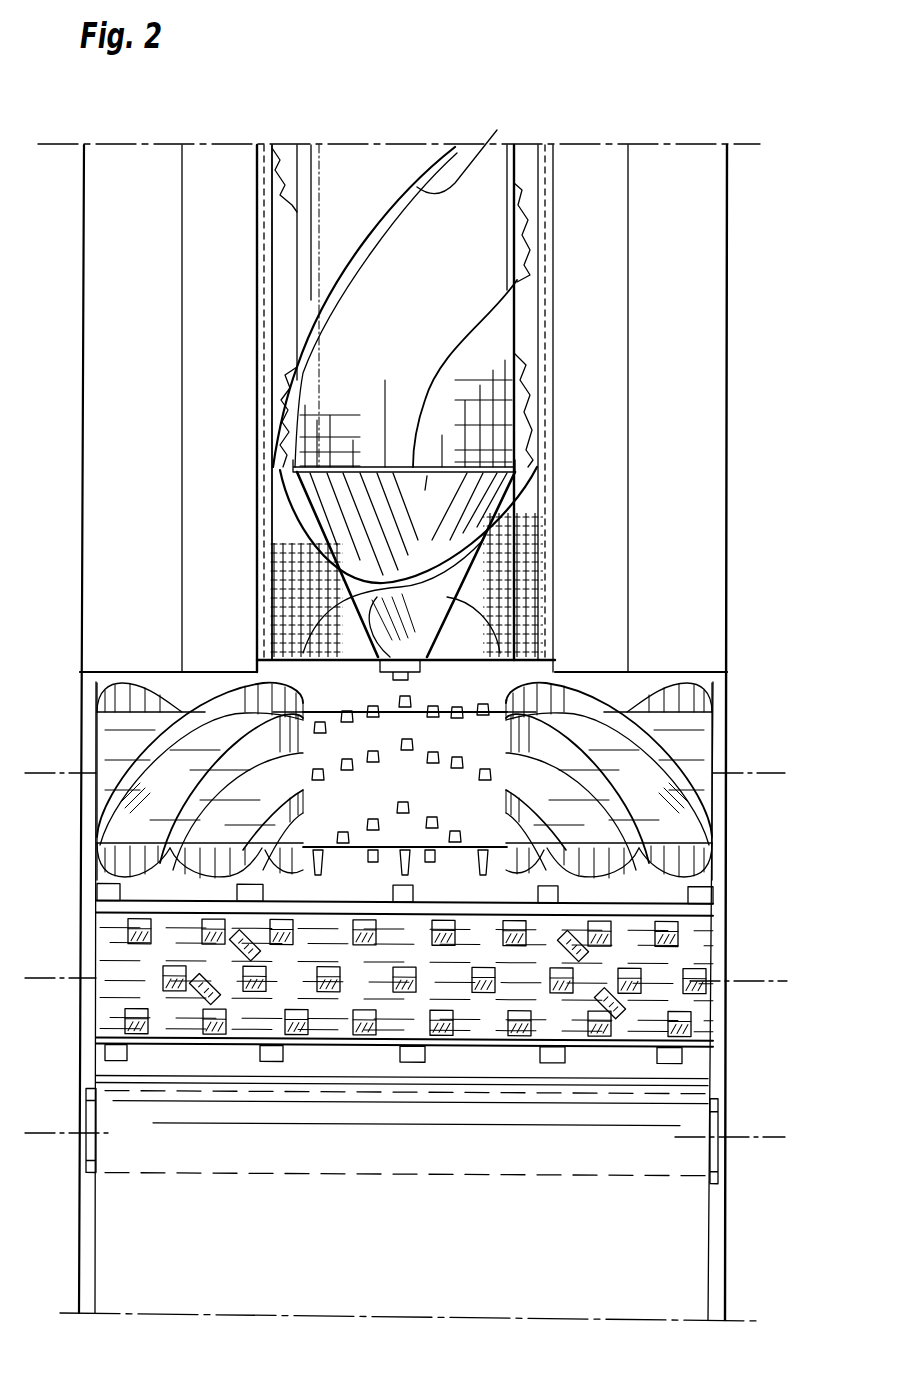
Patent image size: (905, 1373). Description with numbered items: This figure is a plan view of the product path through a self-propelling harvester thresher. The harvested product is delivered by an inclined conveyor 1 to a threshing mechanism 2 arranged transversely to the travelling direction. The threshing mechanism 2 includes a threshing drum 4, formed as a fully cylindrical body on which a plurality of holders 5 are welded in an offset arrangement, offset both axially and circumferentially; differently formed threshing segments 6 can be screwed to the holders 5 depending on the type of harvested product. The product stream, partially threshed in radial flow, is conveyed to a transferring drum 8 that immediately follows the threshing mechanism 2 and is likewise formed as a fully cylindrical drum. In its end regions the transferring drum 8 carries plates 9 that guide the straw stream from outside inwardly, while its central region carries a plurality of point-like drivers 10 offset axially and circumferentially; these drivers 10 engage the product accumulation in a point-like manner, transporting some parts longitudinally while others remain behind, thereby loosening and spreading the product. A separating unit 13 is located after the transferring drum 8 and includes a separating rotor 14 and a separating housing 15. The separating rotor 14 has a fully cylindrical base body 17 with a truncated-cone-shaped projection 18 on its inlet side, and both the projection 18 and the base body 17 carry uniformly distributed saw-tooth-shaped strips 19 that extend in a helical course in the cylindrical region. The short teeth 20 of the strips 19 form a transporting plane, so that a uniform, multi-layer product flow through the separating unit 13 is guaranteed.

The inclined conveyor 1 is at (690, 1238).
The threshing mechanism 2 is at (713, 940).
The threshing drum 4 is at (700, 1015).
The holders 5 is at (598, 1035).
The threshing segments 6 is at (604, 1022).
The transferring drum 8 is at (690, 760).
The plates 9 is at (675, 700).
The drivers 10 is at (455, 835).
The separating unit 13 is at (562, 360).
The separating rotor 14 is at (490, 343).
The separating housing 15 is at (543, 423).
The base body 17 is at (372, 183).
The truncated-cone-shaped projection 18 is at (385, 518).
The saw-tooth-shaped strips 19 is at (510, 280).
The teeth 20 is at (283, 445).